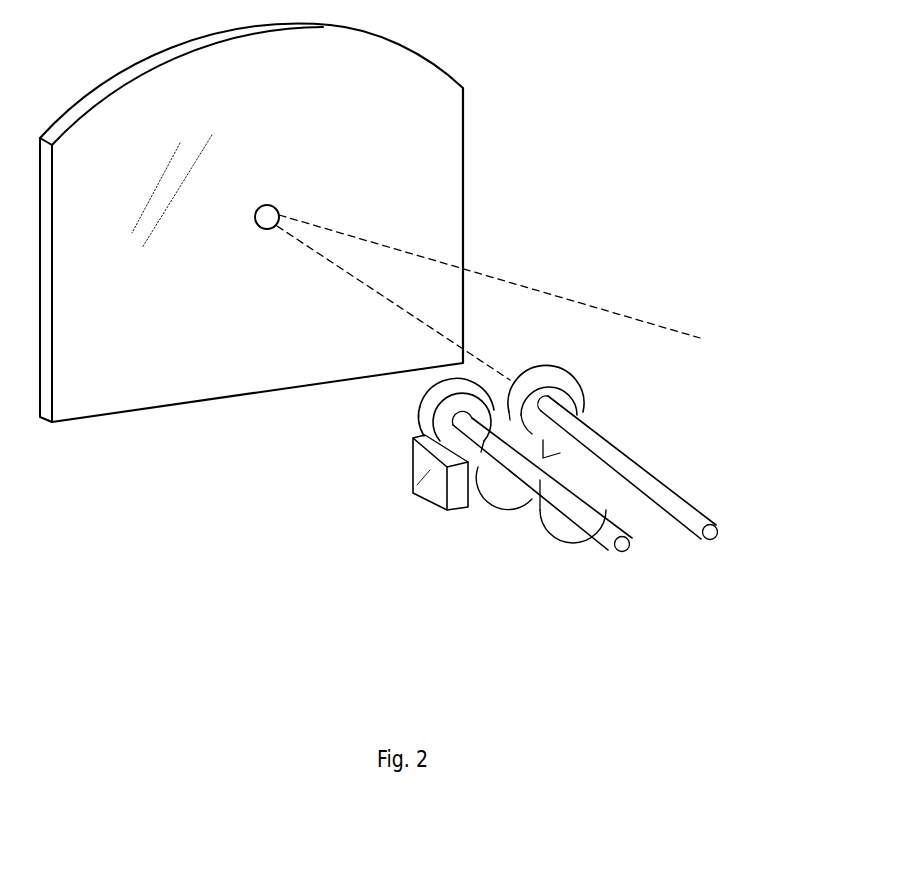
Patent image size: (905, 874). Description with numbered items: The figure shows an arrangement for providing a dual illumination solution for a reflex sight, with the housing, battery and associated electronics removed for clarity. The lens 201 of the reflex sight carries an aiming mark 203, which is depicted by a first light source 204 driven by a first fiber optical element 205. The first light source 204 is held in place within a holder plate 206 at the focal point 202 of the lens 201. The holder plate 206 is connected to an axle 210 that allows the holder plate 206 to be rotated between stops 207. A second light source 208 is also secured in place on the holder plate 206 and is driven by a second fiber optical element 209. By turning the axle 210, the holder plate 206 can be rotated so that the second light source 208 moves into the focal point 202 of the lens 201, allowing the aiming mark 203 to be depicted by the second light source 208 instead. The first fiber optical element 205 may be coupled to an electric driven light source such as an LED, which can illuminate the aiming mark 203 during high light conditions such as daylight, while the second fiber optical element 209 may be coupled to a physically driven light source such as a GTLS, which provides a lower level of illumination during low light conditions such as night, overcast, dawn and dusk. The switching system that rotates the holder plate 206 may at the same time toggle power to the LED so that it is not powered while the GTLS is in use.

The lens 201 is at (150, 377).
The focal point 202 is at (513, 380).
The aiming mark 203 is at (278, 212).
The first light source 204 is at (580, 387).
The first fiber optical element 205 is at (640, 478).
The holder plate 206 is at (445, 446).
The stops 207 is at (413, 495).
The second light source 208 is at (425, 400).
The second fiber optical element 209 is at (535, 533).
The axle 210 is at (577, 530).